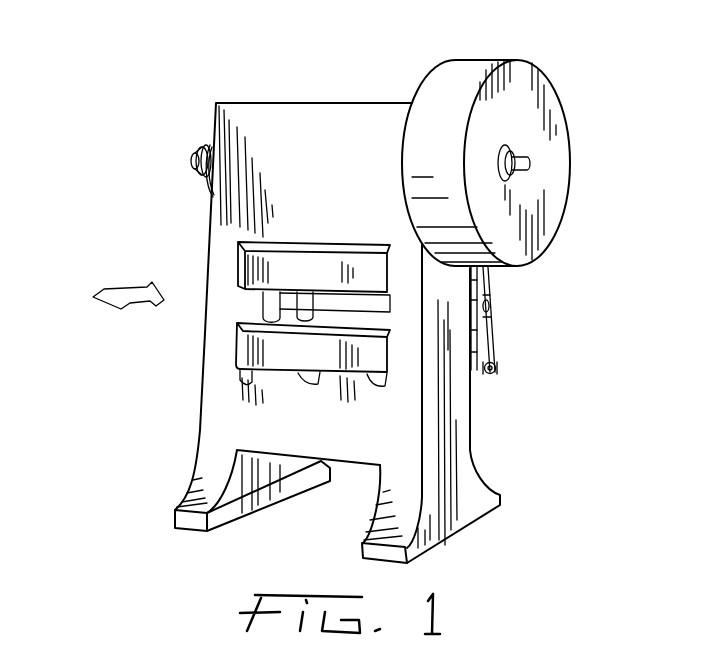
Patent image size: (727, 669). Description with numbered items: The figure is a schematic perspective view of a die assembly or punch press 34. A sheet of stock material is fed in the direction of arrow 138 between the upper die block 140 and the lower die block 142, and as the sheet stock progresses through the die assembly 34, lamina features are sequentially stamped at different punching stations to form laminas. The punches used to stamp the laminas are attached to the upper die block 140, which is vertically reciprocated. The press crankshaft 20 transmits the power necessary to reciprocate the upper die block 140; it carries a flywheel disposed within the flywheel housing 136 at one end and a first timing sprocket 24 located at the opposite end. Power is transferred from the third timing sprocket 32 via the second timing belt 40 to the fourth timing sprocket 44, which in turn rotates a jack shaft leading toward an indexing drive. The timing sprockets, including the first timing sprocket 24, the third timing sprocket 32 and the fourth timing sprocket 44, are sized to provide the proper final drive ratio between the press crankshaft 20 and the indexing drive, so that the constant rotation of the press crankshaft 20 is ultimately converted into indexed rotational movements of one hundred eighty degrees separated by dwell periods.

The press crankshaft 20 is at (198, 165).
The first timing sprocket 24 is at (208, 146).
The third timing sprocket 32 is at (491, 310).
The punch press 34 is at (317, 90).
The second timing belt 40 is at (491, 283).
The fourth timing sprocket 44 is at (494, 373).
The flywheel housing 136 is at (546, 110).
The arrow 138 is at (115, 296).
The upper die block 140 is at (311, 262).
The lower die block 142 is at (293, 356).